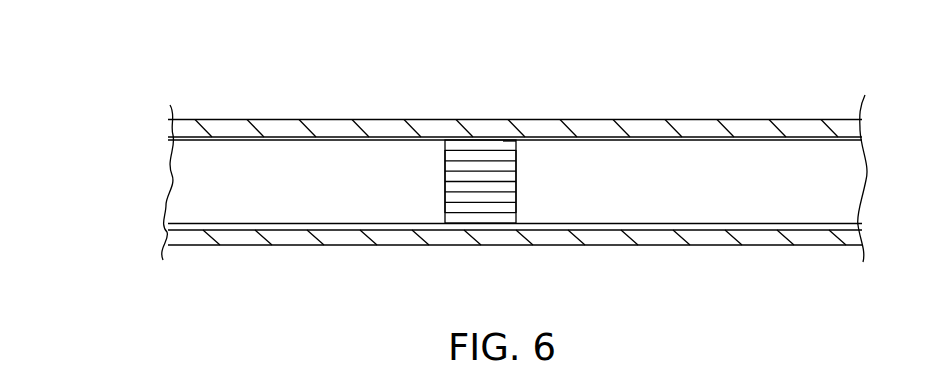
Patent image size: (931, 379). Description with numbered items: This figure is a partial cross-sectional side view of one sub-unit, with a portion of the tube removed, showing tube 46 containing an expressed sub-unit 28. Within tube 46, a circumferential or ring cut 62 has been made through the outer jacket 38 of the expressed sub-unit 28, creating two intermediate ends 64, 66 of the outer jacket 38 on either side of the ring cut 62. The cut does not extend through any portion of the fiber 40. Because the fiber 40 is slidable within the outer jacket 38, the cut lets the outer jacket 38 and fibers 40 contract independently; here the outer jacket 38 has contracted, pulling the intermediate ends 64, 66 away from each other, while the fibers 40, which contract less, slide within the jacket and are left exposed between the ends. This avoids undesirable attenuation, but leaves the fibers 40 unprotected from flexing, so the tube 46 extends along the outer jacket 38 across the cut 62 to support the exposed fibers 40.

The expressed sub-unit 28 is at (195, 190).
The outer jacket 38 is at (350, 195).
The fiber 40 is at (477, 207).
The tube 46 is at (238, 245).
The ring cut 62 is at (509, 131).
The intermediate end 64 is at (445, 193).
The intermediate end 66 is at (515, 185).